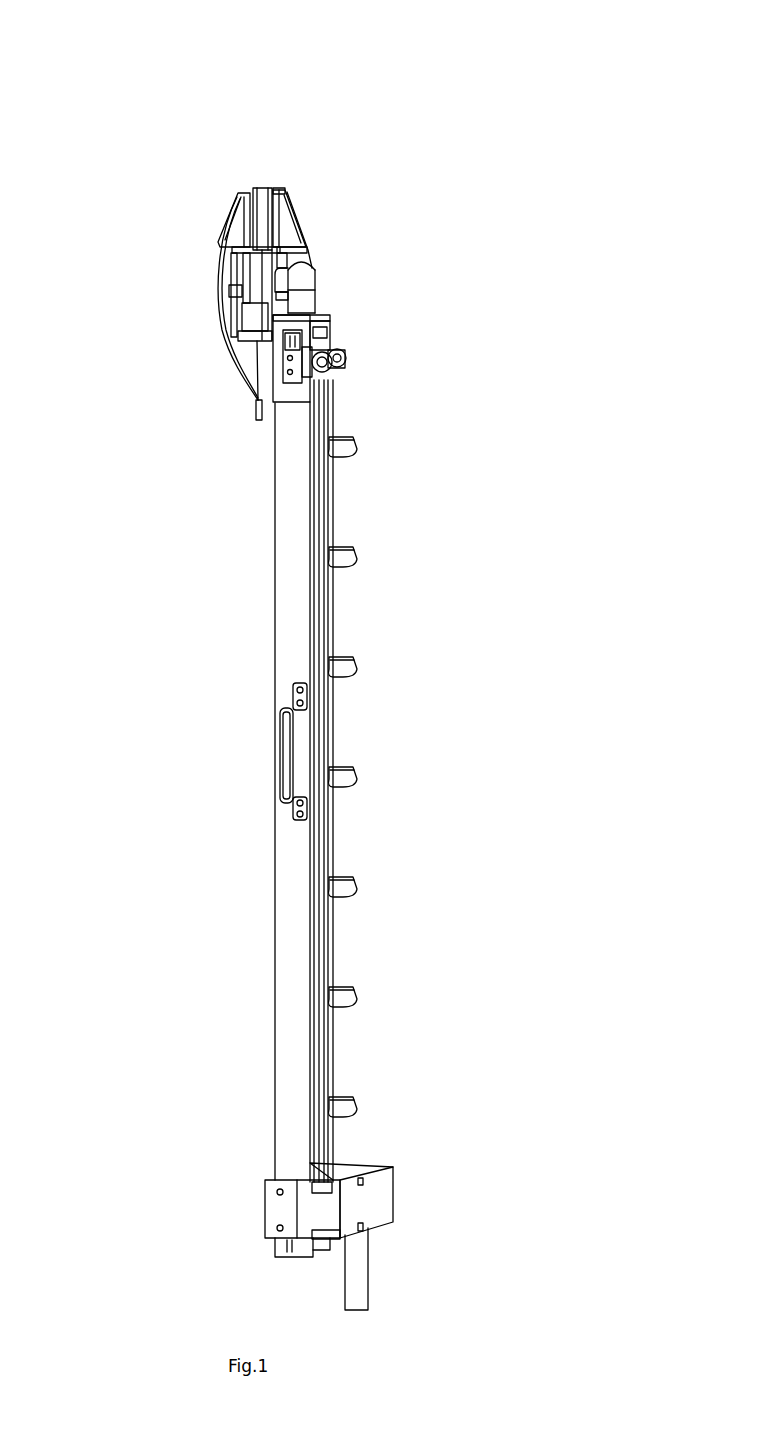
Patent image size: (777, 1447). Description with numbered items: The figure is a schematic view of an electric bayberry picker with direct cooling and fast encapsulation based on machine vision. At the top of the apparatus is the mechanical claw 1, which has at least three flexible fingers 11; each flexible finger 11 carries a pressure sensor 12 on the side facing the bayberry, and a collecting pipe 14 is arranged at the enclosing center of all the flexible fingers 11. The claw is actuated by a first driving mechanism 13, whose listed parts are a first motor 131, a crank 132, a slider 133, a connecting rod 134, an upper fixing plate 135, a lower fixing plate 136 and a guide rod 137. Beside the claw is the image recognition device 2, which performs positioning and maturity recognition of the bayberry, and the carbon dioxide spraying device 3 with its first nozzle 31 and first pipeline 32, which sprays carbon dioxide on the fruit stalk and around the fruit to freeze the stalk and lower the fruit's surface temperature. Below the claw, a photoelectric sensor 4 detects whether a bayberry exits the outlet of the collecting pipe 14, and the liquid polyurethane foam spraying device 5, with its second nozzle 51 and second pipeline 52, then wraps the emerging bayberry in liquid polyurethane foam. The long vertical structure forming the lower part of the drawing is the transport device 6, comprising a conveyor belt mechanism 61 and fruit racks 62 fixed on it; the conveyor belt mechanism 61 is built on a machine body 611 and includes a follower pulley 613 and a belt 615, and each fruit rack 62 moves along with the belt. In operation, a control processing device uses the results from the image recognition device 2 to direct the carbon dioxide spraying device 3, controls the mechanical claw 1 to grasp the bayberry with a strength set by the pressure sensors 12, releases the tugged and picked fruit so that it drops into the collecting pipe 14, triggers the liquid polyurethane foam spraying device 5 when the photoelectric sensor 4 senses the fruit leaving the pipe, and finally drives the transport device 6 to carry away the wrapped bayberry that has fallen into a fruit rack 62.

The mechanical claw 1 is at (335, 196).
The image recognition device 2 is at (352, 250).
The carbon dioxide spraying device 3 is at (192, 171).
The photoelectric sensor 4 is at (359, 336).
The liquid polyurethane foam spraying device 5 is at (377, 318).
The transport device 6 is at (387, 781).
The flexible finger 11 is at (323, 133).
The pressure sensor 12 is at (327, 173).
The first driving mechanism 13 is at (359, 253).
The collecting pipe 14 is at (359, 272).
The first nozzle 31 is at (181, 148).
The first pipeline 32 is at (180, 375).
The second nozzle 51 is at (380, 326).
The second pipeline 52 is at (376, 359).
The conveyor belt mechanism 61 is at (391, 376).
The fruit rack 62 is at (396, 777).
The first motor 131 is at (171, 260).
The crank 132 is at (188, 172).
The slider 133 is at (162, 256).
The connecting rod 134 is at (173, 267).
The upper fixing plate 135 is at (347, 212).
The lower fixing plate 136 is at (185, 312).
The guide rod 137 is at (164, 279).
The machine body 611 is at (191, 792).
The follower pulley 613 is at (397, 397).
The belt 615 is at (398, 781).